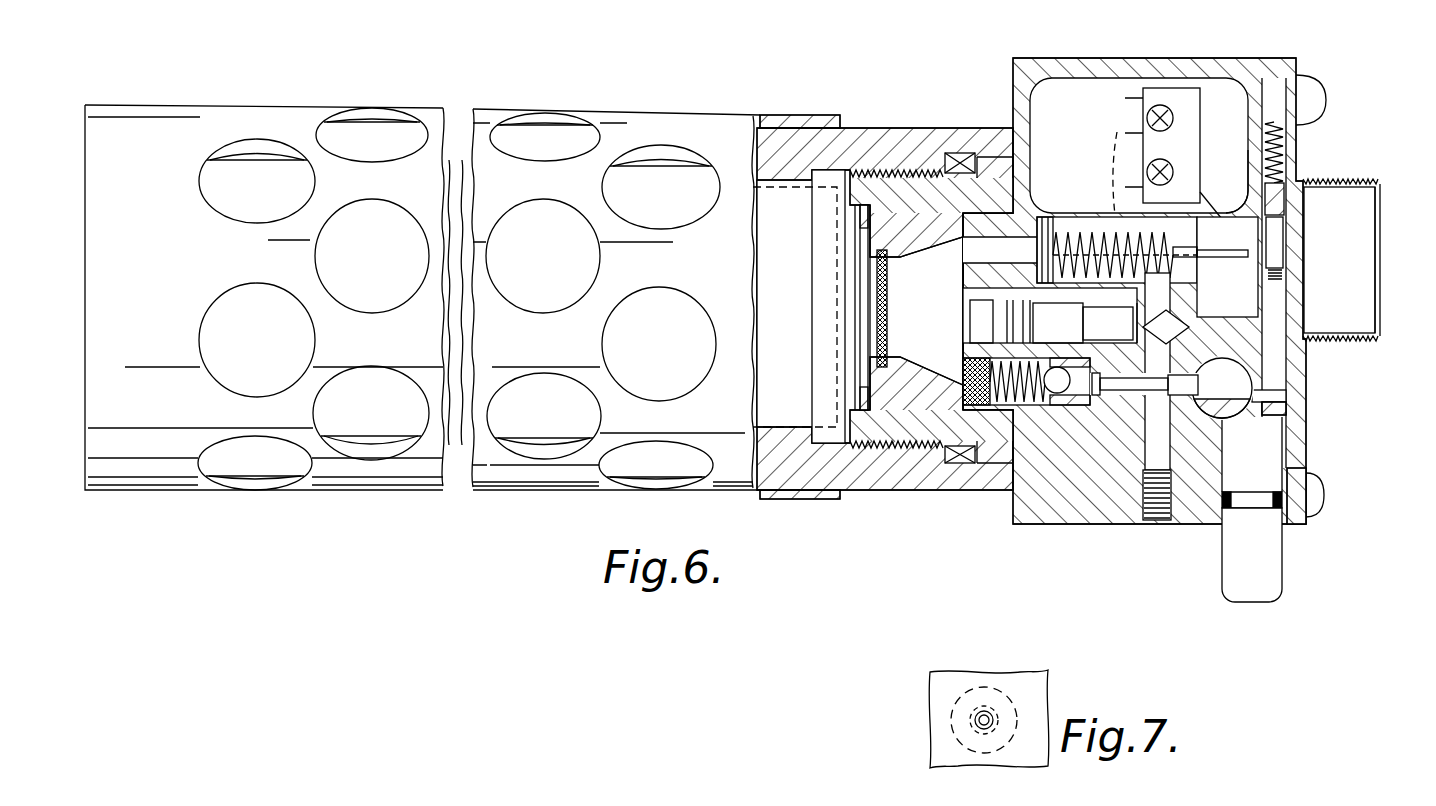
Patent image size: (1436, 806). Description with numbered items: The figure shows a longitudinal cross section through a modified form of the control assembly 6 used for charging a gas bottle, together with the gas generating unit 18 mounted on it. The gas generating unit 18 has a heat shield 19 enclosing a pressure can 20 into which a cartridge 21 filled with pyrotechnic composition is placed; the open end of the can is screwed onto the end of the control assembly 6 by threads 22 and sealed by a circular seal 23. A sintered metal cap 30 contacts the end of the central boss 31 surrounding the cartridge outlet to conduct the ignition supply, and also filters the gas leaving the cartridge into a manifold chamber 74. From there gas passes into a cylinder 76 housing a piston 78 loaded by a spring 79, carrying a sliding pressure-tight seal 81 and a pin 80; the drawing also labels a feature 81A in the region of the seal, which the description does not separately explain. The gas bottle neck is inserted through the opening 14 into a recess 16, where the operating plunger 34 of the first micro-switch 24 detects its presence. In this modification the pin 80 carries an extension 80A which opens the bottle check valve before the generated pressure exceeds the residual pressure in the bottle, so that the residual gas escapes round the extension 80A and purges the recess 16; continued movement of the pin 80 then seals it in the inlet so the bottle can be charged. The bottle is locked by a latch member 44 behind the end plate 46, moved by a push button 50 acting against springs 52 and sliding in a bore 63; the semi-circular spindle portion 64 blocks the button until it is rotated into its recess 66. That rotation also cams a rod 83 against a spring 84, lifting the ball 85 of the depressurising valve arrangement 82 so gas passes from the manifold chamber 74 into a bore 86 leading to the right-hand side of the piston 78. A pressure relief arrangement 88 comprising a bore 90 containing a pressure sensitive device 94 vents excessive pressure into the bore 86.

In FIG. 6, the control assembly 6 is at (1117, 57).
In FIG. 6, the opening 14 is at (1378, 300).
In FIG. 6, the recess 16 is at (1248, 213).
In FIG. 6, the gas generating unit 18 is at (430, 508).
In FIG. 6, the heat shield 19 is at (590, 492).
In FIG. 6, the pressure can 20 is at (850, 492).
In FIG. 6, the cartridge 21 is at (772, 197).
In FIG. 6, the threads 22 is at (900, 449).
In FIG. 6, the circular seal 23 is at (963, 155).
In FIG. 6, the first micro-switch 24 is at (1178, 90).
In FIG. 6, the sintered metal cap 30 is at (905, 333).
In FIG. 6, the central boss 31 is at (866, 283).
In FIG. 6, the operating plunger 34 is at (1222, 219).
In FIG. 6, the latch member 44 is at (1280, 236).
In FIG. 6, the end plate 46 is at (1295, 527).
In FIG. 6, the push button 50 is at (1282, 577).
In FIG. 6, the springs 52 is at (1296, 150).
In FIG. 6, the bore 63 is at (1249, 352).
In FIG. 6, the spindle portion 64 is at (1288, 396).
In FIG. 6, the recess 66 is at (1230, 357).
In FIG. 6, the manifold chamber 74 is at (950, 294).
In FIG. 6, the cylinder 76 is at (1000, 243).
In FIG. 6, the piston 78 is at (1062, 228).
In FIG. 6, the spring 79 is at (1090, 230).
In FIG. 6, the pin 80 is at (1200, 238).
In FIG. 6, the extension 80A is at (1272, 284).
In FIG. 6, the sliding pressure-tight seal 81 is at (1043, 205).
In FIG. 7, the sliding pressure-tight seal 81 is at (950, 700).
In FIG. 6, the diaphragm center 81A is at (1105, 162).
In FIG. 7, the diaphragm center 81A is at (985, 715).
In FIG. 6, the depressurising valve arrangement 82 is at (1113, 400).
In FIG. 6, the rod 83 is at (1133, 392).
In FIG. 6, the spring 84 is at (1018, 407).
In FIG. 6, the ball 85 is at (1052, 405).
In FIG. 6, the bore 86 is at (1157, 450).
In FIG. 6, the pressure relief arrangement 88 is at (990, 320).
In FIG. 6, the bore 90 is at (1083, 307).
In FIG. 6, the pressure sensitive device 94 is at (1030, 322).